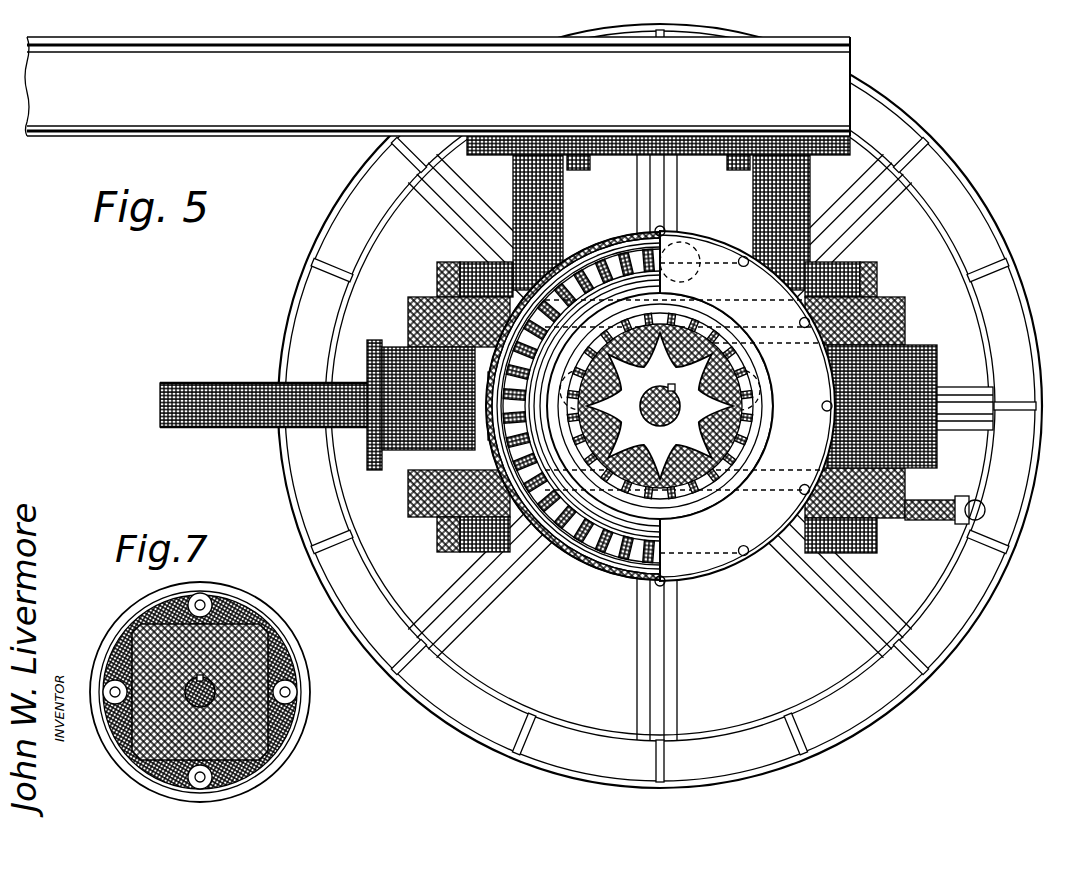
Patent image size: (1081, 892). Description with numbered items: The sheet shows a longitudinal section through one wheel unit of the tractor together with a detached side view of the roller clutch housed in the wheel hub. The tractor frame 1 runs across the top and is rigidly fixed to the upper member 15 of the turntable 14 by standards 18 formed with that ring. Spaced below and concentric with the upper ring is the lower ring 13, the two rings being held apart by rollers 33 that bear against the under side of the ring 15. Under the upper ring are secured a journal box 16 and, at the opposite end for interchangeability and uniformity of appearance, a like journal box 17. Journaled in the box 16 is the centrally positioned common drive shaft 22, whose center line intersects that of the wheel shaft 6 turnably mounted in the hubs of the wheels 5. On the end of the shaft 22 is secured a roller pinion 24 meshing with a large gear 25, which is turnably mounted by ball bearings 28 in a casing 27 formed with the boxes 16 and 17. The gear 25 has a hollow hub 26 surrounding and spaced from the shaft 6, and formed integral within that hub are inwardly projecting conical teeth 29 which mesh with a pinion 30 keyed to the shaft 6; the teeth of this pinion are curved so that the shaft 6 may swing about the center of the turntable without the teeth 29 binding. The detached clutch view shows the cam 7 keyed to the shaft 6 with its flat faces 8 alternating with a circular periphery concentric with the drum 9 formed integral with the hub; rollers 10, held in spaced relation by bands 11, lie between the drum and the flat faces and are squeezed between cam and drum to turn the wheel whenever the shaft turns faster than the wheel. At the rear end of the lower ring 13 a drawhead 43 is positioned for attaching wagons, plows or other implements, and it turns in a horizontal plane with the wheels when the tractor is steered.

In FIG. 5, the frame 1 is at (255, 122).
In FIG. 5, the wheels 5 is at (325, 292).
In FIG. 5, the shaft 6 is at (690, 495).
In FIG. 7, the shaft 6 is at (140, 745).
In FIG. 7, the cam 7 is at (232, 748).
In FIG. 7, the flat faces 8 is at (268, 710).
In FIG. 7, the drum 9 is at (306, 704).
In FIG. 7, the rollers 10 is at (205, 600).
In FIG. 7, the bands 11 is at (270, 742).
In FIG. 5, the lower ring 13 is at (445, 541).
In FIG. 5, the turntable 14 is at (410, 305).
In FIG. 5, the upper member 15 is at (442, 270).
In FIG. 5, the journal box 16 is at (395, 420).
In FIG. 5, the journal box 17 is at (903, 372).
In FIG. 5, the standards 18 is at (548, 197).
In FIG. 5, the common drive shaft 22 is at (202, 405).
In FIG. 5, the roller pinion 24 is at (417, 510).
In FIG. 5, the large gear 25 is at (565, 560).
In FIG. 5, the hollow hub 26 is at (480, 560).
In FIG. 5, the casing 27 is at (592, 560).
In FIG. 5, the ball bearings 28 is at (755, 432).
In FIG. 5, the conical teeth 29 is at (622, 530).
In FIG. 5, the pinion 30 is at (650, 515).
In FIG. 5, the rollers 33 is at (765, 386).
In FIG. 5, the drawhead 43 is at (930, 518).